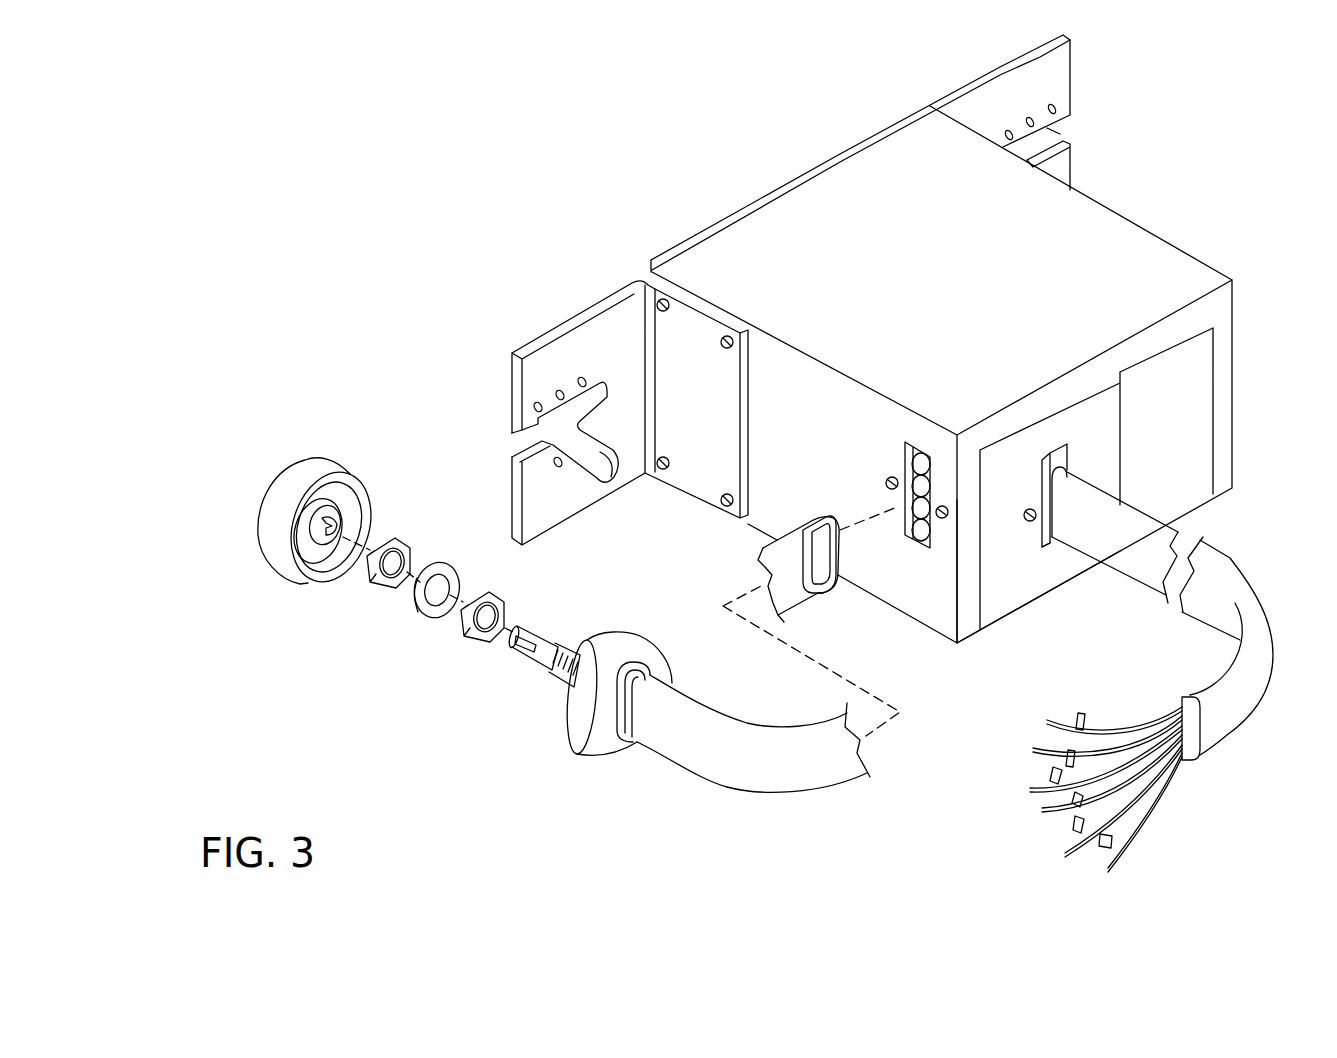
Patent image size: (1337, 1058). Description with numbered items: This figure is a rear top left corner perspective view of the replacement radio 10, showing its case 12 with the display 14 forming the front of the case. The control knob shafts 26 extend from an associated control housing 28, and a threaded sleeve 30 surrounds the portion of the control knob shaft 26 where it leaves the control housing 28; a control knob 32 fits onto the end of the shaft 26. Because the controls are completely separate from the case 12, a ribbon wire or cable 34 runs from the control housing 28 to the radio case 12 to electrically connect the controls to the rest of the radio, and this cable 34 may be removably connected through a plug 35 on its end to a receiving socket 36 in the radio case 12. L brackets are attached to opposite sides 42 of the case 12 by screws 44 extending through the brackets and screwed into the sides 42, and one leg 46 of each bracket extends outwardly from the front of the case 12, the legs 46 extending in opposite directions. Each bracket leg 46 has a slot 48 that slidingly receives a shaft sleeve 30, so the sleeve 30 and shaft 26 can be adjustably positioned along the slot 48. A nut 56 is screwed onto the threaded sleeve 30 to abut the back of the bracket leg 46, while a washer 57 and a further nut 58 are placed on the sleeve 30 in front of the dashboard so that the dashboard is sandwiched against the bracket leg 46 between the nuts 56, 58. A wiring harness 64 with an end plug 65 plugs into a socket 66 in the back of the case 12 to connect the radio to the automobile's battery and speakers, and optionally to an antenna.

The replacement radio 10 is at (963, 374).
The case 12 is at (1120, 232).
The display 14 is at (808, 178).
The control knob shaft 26 is at (533, 655).
The control housing 28 is at (580, 733).
The threaded sleeve 30 is at (572, 650).
The control knob 32 is at (277, 555).
The cable 34 is at (707, 770).
The plug 35 is at (836, 590).
The receiving socket 36 is at (905, 478).
The side 42 is at (920, 615).
The screw 44 is at (722, 343).
The bracket leg 46 is at (587, 332).
The slot 48 is at (520, 436).
The nut 56 is at (470, 635).
The washer 57 is at (418, 608).
The nut 58 is at (375, 578).
The wiring harness 64 is at (1243, 578).
The end plug 65 is at (1047, 548).
The socket 66 is at (1055, 455).